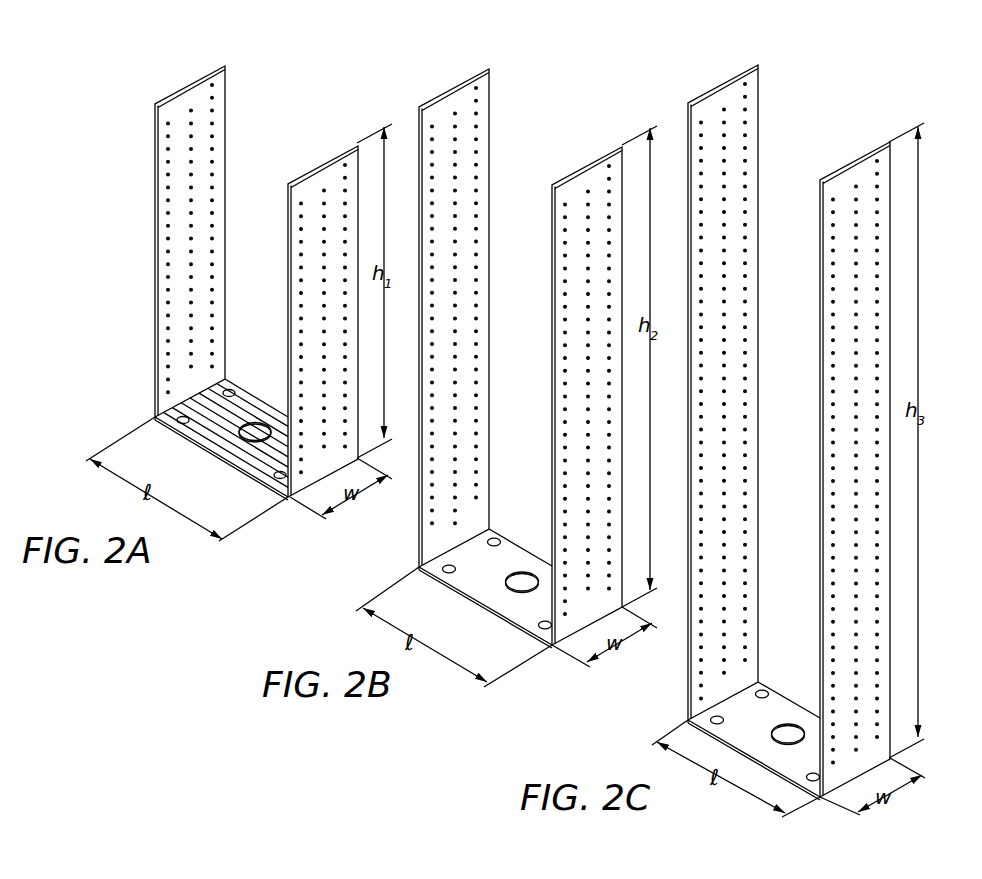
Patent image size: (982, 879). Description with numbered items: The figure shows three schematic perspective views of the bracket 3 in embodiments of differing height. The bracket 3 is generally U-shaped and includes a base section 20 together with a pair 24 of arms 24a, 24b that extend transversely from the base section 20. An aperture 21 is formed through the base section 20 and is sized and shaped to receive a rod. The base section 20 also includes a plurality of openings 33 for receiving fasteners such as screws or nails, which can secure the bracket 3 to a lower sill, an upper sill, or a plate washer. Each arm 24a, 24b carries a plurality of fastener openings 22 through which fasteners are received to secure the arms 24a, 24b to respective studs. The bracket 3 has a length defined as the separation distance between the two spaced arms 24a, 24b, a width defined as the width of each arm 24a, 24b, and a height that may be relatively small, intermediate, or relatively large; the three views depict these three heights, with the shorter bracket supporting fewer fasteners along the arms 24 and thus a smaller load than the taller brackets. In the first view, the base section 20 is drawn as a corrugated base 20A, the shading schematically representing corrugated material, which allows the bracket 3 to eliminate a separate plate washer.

In FIG. 2A, the bracket 3 is at (209, 280).
In FIG. 2B, the bracket 3 is at (497, 354).
In FIG. 2C, the bracket 3 is at (800, 429).
In FIG. 2A, the base section 20 is at (210, 429).
In FIG. 2B, the base section 20 is at (472, 576).
In FIG. 2C, the base section 20 is at (747, 728).
In FIG. 2A, the corrugated base 20A is at (213, 432).
In FIG. 2A, the aperture 21 is at (255, 436).
In FIG. 2B, the aperture 21 is at (520, 586).
In FIG. 2C, the aperture 21 is at (788, 738).
In FIG. 2A, the fastener openings 22 is at (168, 178).
In FIG. 2B, the fastener openings 22 is at (478, 280).
In FIG. 2C, the fastener openings 22 is at (745, 227).
In FIG. 2A, the pair of arms 24 is at (233, 279).
In FIG. 2B, the pair of arms 24 is at (519, 353).
In FIG. 2C, the pair of arms 24 is at (776, 431).
In FIG. 2A, the first arm 24a is at (161, 239).
In FIG. 2B, the first arm 24a is at (468, 314).
In FIG. 2C, the first arm 24a is at (732, 392).
In FIG. 2A, the second arm 24b is at (320, 175).
In FIG. 2B, the second arm 24b is at (595, 173).
In FIG. 2C, the second arm 24b is at (848, 177).
In FIG. 2A, the openings 33 is at (233, 392).
In FIG. 2B, the openings 33 is at (498, 540).
In FIG. 2C, the openings 33 is at (766, 692).